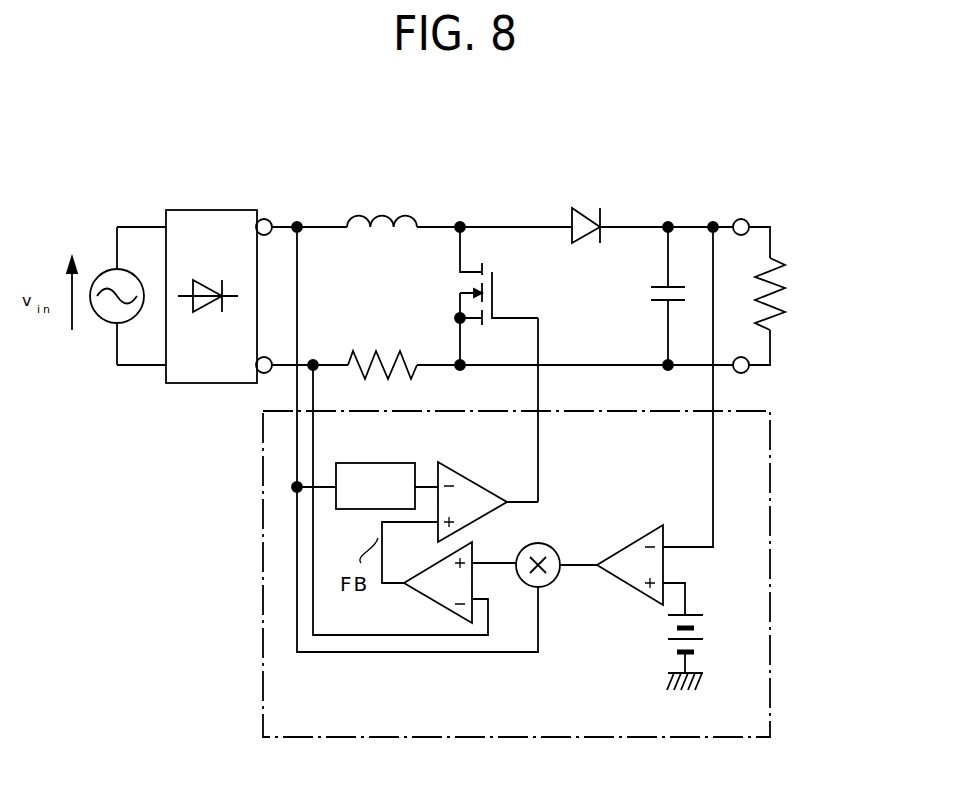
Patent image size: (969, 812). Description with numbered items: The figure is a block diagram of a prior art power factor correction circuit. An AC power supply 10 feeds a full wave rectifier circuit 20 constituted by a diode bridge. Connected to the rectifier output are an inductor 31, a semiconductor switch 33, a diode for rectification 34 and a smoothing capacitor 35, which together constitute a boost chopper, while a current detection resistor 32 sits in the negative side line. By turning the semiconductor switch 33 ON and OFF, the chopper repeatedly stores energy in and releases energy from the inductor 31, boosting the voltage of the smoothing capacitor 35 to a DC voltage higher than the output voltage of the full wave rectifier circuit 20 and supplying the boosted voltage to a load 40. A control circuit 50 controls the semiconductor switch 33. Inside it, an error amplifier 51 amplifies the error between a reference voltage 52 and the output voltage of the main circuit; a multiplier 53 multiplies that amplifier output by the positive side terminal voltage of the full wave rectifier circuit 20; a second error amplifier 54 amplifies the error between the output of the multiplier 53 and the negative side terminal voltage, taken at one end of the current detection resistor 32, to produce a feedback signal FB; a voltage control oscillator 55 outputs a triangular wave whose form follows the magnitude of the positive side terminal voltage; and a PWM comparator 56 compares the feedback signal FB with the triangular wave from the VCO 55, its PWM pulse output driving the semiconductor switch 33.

The AC power supply 10 is at (103, 268).
The full wave rectifier circuit 20 is at (208, 216).
The inductor 31 is at (380, 207).
The current detection resistor 32 is at (379, 349).
The semiconductor switch 33 is at (500, 291).
The diode for rectification 34 is at (586, 207).
The smoothing capacitor 35 is at (647, 291).
The load 40 is at (792, 292).
The control circuit 50 is at (262, 690).
The error amplifier 51 is at (625, 552).
The reference voltage 52 is at (708, 640).
The multiplier 53 is at (559, 580).
The error amplifier 54 is at (443, 598).
The voltage control oscillator (VCO) 55 is at (381, 462).
The PWM comparator 56 is at (478, 492).